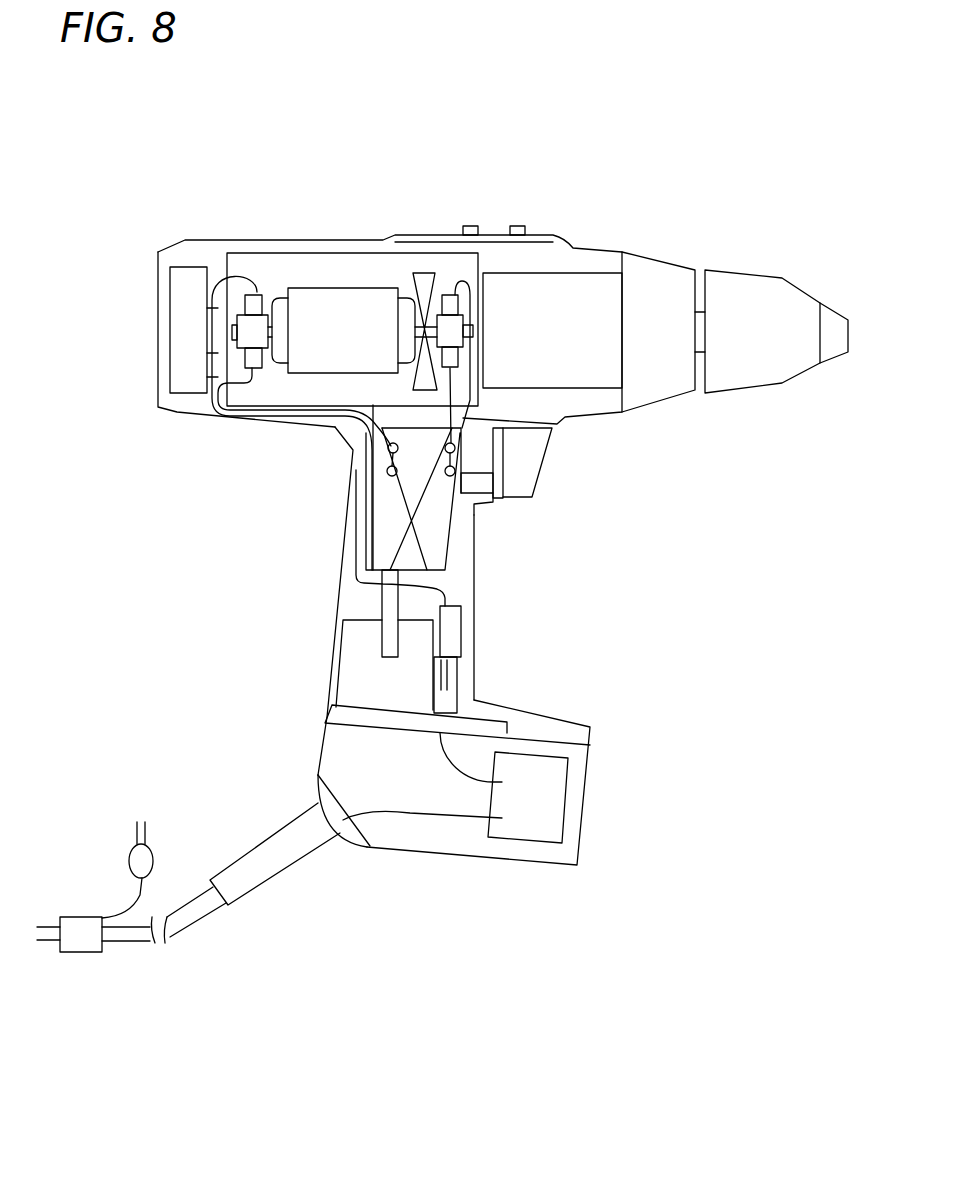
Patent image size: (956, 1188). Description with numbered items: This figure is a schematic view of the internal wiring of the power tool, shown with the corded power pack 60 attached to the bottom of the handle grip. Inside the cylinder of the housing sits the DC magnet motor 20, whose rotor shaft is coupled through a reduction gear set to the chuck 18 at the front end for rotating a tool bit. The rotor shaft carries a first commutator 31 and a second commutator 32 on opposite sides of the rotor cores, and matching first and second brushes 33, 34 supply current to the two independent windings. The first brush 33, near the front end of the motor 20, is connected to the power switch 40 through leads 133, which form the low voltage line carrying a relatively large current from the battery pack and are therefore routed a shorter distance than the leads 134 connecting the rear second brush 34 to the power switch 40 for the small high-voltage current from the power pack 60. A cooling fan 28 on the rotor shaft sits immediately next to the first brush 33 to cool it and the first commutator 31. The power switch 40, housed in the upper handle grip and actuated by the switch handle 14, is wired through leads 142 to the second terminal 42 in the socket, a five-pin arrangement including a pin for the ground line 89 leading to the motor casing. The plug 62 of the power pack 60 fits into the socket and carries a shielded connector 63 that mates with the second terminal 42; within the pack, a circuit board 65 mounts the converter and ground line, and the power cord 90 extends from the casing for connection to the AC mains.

The switch handle 14 is at (522, 473).
The chuck 18 is at (762, 293).
The DC magnet motor 20 is at (352, 330).
The cooling fan 28 is at (423, 275).
The first commutator 31 is at (457, 323).
The second commutator 32 is at (247, 340).
The first brush 33 is at (448, 300).
The second brush 34 is at (255, 295).
The power switch 40 is at (380, 525).
The second terminal 42 is at (452, 635).
The corded power pack 60 is at (423, 850).
The plug 62 is at (355, 673).
The shielded connector 63 is at (453, 687).
The circuit board 65 is at (555, 795).
The ground line 89 is at (353, 575).
The power cord 90 is at (193, 918).
The leads 133 is at (503, 430).
The leads 134 is at (350, 428).
The leads 142 is at (457, 593).